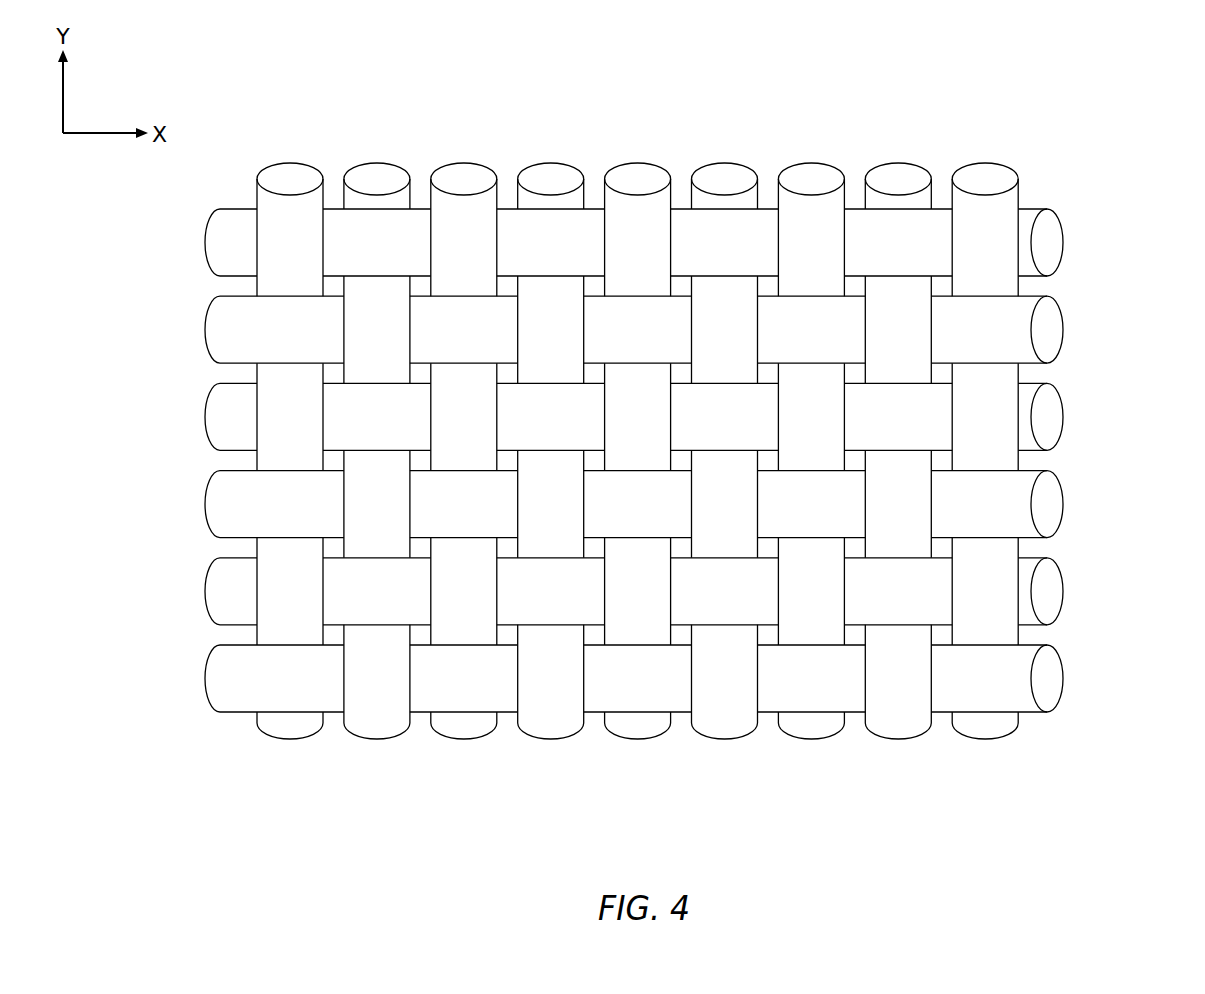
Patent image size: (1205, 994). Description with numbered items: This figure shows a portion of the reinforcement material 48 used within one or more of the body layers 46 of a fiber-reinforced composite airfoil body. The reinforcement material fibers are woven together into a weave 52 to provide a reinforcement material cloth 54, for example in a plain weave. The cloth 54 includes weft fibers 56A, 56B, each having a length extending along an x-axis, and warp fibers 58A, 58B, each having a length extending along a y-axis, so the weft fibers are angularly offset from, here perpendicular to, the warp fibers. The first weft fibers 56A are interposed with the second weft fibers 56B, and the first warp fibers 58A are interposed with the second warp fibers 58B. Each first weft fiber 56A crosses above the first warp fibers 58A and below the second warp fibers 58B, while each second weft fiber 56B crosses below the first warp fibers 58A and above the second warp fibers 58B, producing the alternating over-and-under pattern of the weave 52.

The body layer 46 is at (1025, 153).
The reinforcement material 48 is at (695, 436).
The weave 52 is at (297, 107).
The reinforcement material cloth 54 is at (695, 502).
The first weft fibers 56A is at (1137, 598).
The second weft fibers 56B is at (1137, 686).
The first warp fibers 58A is at (909, 810).
The second warp fibers 58B is at (995, 810).